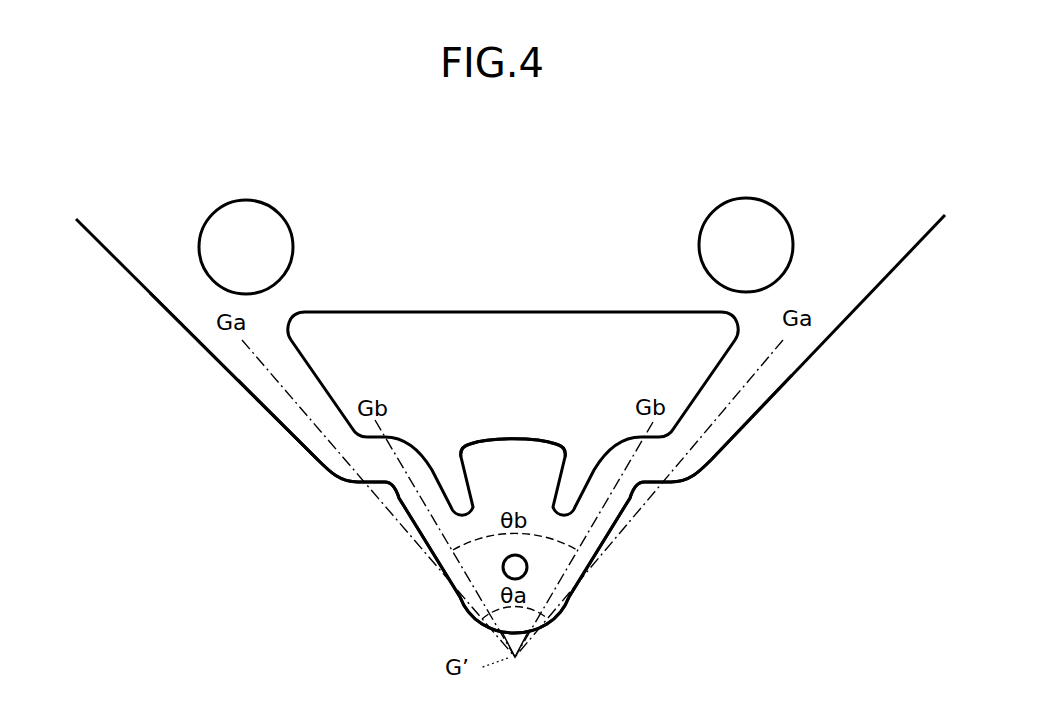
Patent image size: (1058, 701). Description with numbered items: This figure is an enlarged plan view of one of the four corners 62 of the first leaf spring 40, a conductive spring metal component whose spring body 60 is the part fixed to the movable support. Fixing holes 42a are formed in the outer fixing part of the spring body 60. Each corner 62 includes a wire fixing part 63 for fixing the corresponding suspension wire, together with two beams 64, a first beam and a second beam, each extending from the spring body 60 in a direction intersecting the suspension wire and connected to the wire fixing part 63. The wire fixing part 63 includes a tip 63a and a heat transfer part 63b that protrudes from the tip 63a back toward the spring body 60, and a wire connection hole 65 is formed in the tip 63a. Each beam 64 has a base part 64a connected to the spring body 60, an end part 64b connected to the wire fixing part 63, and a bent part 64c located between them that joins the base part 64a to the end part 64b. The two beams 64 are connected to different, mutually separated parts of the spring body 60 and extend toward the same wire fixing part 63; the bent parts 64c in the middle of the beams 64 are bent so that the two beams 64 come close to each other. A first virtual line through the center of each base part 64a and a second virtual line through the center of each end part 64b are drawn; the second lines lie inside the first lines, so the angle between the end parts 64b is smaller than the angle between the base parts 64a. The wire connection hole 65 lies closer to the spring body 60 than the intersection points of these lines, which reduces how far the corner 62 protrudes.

The first leaf spring 40 is at (137, 280).
The fixing holes 42a is at (213, 212).
The spring body 60 is at (868, 277).
The corner 62 is at (190, 322).
The wire fixing part 63 is at (590, 565).
The tip 63a is at (563, 613).
The heat transfer part 63b is at (533, 433).
The beam 64 is at (323, 453).
The base part 64a is at (270, 407).
The end part 64b is at (423, 518).
The bent part 64c is at (383, 467).
The wire connection hole 65 is at (528, 567).